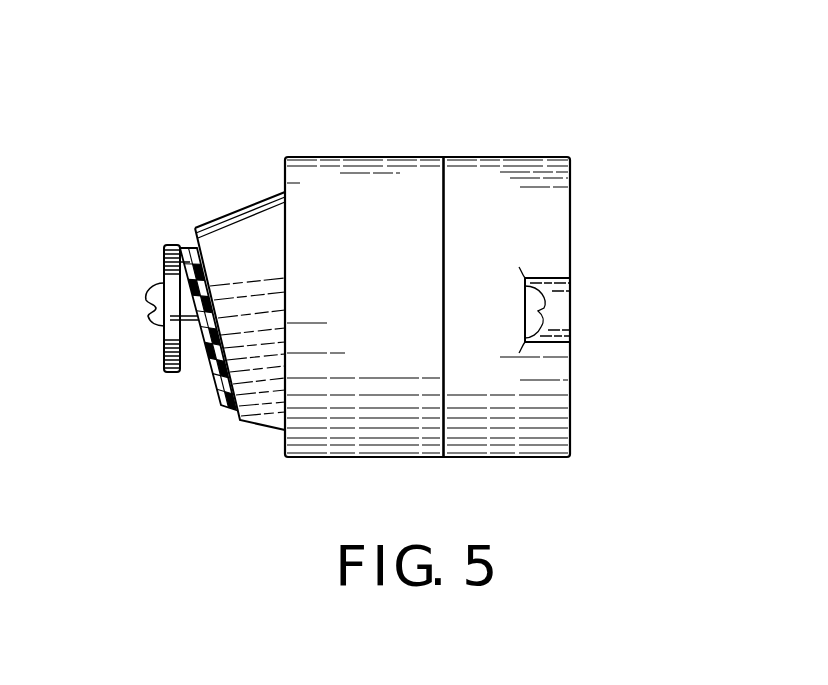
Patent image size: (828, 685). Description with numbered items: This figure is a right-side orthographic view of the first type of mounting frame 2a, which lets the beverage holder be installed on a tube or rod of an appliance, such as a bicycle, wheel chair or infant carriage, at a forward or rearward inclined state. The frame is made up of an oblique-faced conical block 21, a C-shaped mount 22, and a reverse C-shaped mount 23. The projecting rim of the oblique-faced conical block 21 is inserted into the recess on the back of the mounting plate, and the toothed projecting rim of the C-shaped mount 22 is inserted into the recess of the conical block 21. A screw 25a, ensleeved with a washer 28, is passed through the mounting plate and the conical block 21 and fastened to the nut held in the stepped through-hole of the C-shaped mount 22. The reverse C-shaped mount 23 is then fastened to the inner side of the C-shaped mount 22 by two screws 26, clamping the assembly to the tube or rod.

The first type of mounting frame 2a is at (548, 148).
The oblique-faced conical block 21 is at (233, 206).
The C-shaped mount 22 is at (340, 155).
The reverse C-shaped mount 23 is at (468, 157).
The screw 25a is at (147, 323).
The screws 26 is at (551, 292).
The washer 28 is at (172, 373).